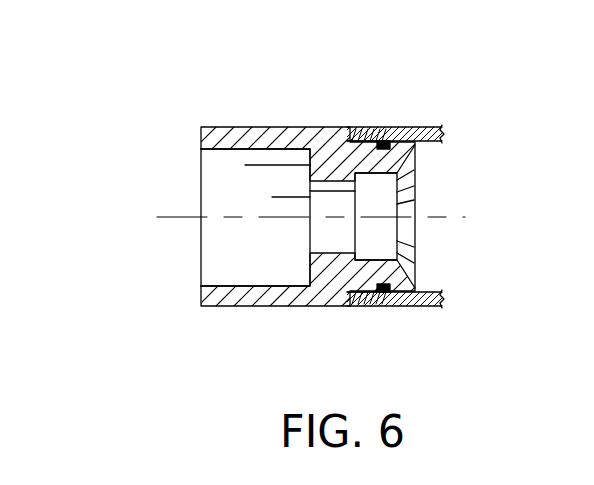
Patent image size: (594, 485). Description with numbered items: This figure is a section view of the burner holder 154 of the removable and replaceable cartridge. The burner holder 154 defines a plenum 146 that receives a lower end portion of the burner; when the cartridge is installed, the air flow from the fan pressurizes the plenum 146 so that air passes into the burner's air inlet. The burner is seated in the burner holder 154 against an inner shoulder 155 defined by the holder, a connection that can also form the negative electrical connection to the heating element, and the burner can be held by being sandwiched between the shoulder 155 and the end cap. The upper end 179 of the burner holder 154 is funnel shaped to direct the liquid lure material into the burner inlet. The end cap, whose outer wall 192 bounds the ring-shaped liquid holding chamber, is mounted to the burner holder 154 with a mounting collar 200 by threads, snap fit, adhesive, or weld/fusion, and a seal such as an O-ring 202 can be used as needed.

The burner holder 154 is at (240, 118).
The plenum 146 is at (238, 175).
The inner shoulder 155 is at (357, 175).
The upper end 179 is at (408, 150).
The outer wall 192 is at (422, 128).
The mounting collar 200 is at (365, 128).
The O-ring 202 is at (390, 130).